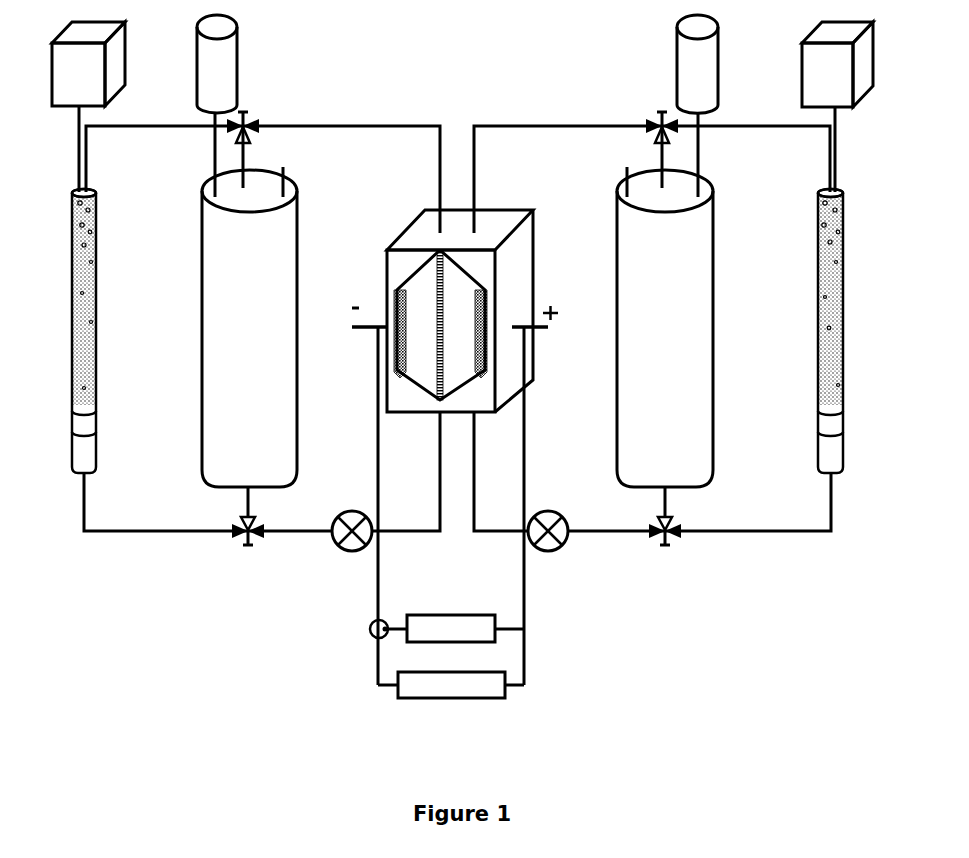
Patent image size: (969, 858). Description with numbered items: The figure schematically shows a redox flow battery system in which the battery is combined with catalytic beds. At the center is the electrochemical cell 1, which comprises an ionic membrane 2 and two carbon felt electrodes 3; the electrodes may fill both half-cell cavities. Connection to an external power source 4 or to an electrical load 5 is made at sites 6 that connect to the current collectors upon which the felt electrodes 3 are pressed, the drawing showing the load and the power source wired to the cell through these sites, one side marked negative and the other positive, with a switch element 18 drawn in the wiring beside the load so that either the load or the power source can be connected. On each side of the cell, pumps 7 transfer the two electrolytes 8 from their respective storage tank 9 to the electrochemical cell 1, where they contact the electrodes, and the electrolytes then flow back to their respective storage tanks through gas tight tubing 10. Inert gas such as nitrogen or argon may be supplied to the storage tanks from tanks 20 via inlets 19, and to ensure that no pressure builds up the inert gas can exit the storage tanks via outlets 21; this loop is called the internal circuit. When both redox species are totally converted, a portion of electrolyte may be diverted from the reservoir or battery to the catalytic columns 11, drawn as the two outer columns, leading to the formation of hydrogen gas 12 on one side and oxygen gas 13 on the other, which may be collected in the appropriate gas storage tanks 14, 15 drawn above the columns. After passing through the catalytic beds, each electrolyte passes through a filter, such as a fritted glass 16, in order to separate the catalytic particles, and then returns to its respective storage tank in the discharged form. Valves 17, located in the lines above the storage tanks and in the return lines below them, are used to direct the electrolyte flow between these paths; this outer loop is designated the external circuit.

The electrochemical cell 1 is at (493, 222).
The ionic membrane 2 is at (442, 402).
The carbon felt electrodes 3 is at (407, 373).
The external power source 4 is at (419, 700).
The electrical load 5 is at (481, 613).
The connection sites 6 is at (359, 331).
The pumps 7 is at (337, 542).
The electrolytes 8 is at (422, 287).
The storage tank 9 is at (297, 220).
The gas tight tubing 10 is at (405, 125).
The catalytic columns 11 is at (72, 343).
The hydrogen gas 12 is at (97, 197).
The oxygen gas 13 is at (844, 197).
The gas storage tank 14 is at (125, 44).
The gas storage tank 15 is at (801, 56).
The fritted glass 16 is at (72, 427).
The valves 17 is at (250, 122).
The switch 18 is at (370, 635).
The inlets 19 is at (213, 132).
The tanks 20 is at (237, 59).
The outlets 21 is at (288, 166).